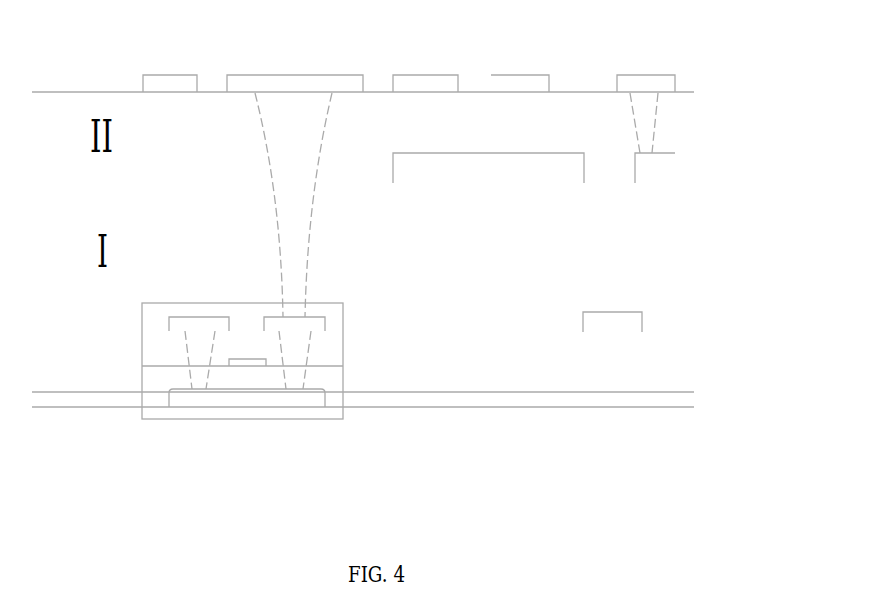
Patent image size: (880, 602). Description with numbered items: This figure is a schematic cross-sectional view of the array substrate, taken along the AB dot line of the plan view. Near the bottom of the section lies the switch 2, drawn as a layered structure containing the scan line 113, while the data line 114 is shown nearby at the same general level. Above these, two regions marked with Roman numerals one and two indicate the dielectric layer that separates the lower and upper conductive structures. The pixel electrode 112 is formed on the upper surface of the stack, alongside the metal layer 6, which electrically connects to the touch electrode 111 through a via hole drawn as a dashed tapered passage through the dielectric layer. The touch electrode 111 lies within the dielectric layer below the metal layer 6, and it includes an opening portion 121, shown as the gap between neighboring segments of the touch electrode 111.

The switch 2 is at (185, 419).
The metal layer 6 is at (645, 75).
The touch electrode 111 is at (546, 183).
The pixel electrode 112 is at (430, 73).
The scan line 113 is at (247, 360).
The data line 114 is at (612, 312).
The opening portion of the touch electrode 121 is at (608, 170).